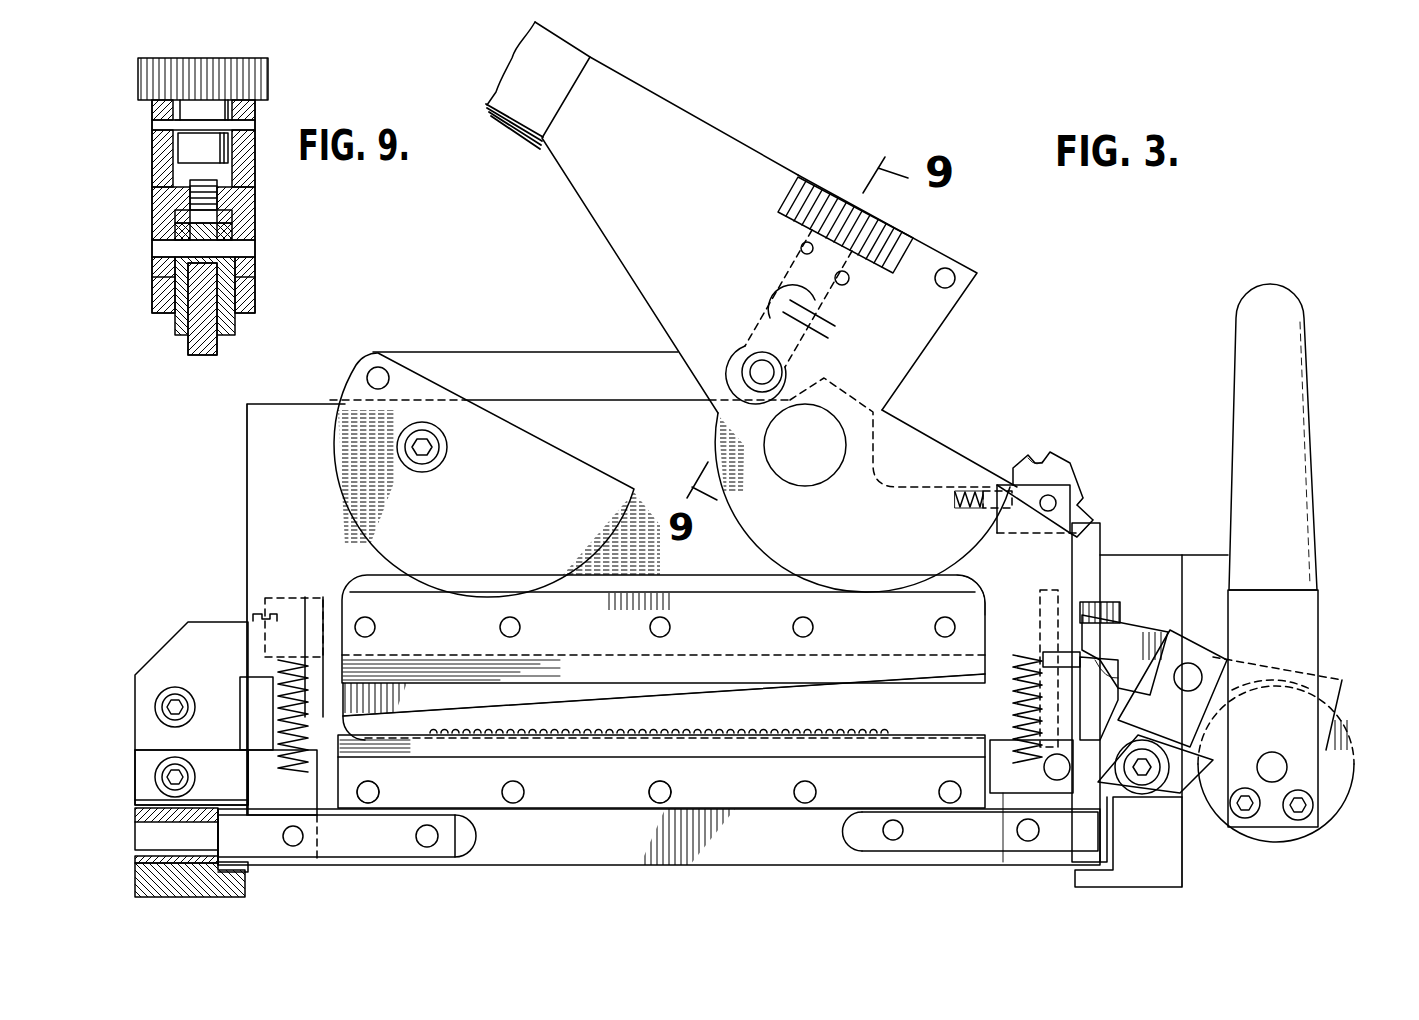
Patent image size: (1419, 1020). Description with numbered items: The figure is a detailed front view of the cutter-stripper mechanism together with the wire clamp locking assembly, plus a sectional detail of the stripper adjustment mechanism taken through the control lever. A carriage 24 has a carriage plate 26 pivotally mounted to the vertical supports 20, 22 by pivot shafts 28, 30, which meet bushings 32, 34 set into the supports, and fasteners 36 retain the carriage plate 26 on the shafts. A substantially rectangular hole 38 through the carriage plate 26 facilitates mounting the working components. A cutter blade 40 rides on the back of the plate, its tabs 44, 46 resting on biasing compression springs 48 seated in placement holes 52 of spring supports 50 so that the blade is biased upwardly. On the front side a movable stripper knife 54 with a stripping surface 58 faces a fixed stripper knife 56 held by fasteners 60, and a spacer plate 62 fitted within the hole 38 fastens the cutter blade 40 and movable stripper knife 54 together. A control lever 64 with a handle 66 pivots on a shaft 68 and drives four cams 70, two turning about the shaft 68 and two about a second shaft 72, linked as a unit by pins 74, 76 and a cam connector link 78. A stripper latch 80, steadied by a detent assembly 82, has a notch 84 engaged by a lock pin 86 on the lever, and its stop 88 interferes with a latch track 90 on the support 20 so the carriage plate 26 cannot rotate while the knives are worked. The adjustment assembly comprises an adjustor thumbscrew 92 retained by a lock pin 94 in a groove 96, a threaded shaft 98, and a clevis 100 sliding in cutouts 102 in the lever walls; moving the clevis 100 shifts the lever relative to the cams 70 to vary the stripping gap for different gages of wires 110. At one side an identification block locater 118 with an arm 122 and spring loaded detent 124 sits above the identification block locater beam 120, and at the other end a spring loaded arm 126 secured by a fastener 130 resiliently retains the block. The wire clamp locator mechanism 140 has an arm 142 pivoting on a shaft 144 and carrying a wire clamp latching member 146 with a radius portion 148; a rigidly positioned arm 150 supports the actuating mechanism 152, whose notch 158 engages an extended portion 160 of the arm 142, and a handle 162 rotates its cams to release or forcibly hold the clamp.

In FIG. 3, the vertical support 20 is at (1172, 865).
In FIG. 3, the vertical support 22 is at (140, 866).
In FIG. 3, the carriage 24 is at (243, 408).
In FIG. 9, the carriage plate 26 is at (202, 343).
In FIG. 3, the carriage plate 26 is at (257, 527).
In FIG. 3, the pivot shaft 28 is at (933, 843).
In FIG. 3, the pivot shaft 30 is at (408, 826).
In FIG. 3, the bushing 32 is at (1098, 826).
In FIG. 3, the bushing 34 is at (218, 820).
In FIG. 3, the fasteners 36 is at (904, 832).
In FIG. 3, the substantially rectangular hole 38 is at (708, 575).
In FIG. 3, the cutter blade 40 is at (676, 694).
In FIG. 3, the tab 44 is at (1052, 592).
In FIG. 3, the tab 46 is at (274, 596).
In FIG. 3, the biasing compression springs 48 is at (282, 718).
In FIG. 3, the spring supports 50 is at (320, 784).
In FIG. 3, the placement holes 52 is at (287, 778).
In FIG. 3, the movable stripper knife 54 is at (1035, 597).
In FIG. 3, the fixed stripper knife 56 is at (573, 797).
In FIG. 3, the stripping surface 58 is at (556, 672).
In FIG. 3, the fasteners 60 is at (668, 786).
In FIG. 3, the spacer plate 62 is at (985, 600).
In FIG. 9, the control lever 64 is at (258, 100).
In FIG. 3, the control lever 64 is at (948, 255).
In FIG. 3, the handle 66 is at (566, 42).
In FIG. 3, the shaft 68 is at (822, 478).
In FIG. 3, the cams 70 is at (925, 433).
In FIG. 3, the second shaft 72 is at (428, 458).
In FIG. 9, the pin 74 is at (255, 244).
In FIG. 3, the pin 74 is at (752, 365).
In FIG. 3, the pin 76 is at (384, 370).
In FIG. 3, the cam connector link 78 is at (505, 356).
In FIG. 3, the stripper latch 80 is at (1080, 478).
In FIG. 3, the detent assembly 82 is at (985, 490).
In FIG. 3, the notch 84 is at (1030, 458).
In FIG. 3, the lock pin 86 is at (953, 276).
In FIG. 3, the stop 88 is at (1088, 510).
In FIG. 3, the latch track 90 is at (1100, 526).
In FIG. 9, the adjustor thumbscrew 92 is at (270, 62).
In FIG. 3, the adjustor thumbscrew 92 is at (823, 188).
In FIG. 9, the lock pin 94 is at (255, 124).
In FIG. 3, the lock pin 94 is at (850, 280).
In FIG. 9, the groove 96 is at (190, 118).
In FIG. 3, the groove 96 is at (800, 245).
In FIG. 9, the threaded shaft 98 is at (217, 192).
In FIG. 3, the threaded shaft 98 is at (772, 306).
In FIG. 9, the clevis 100 is at (157, 210).
In FIG. 3, the clevis 100 is at (805, 345).
In FIG. 9, the cutouts 102 is at (250, 175).
In FIG. 3, the cutouts 102 is at (822, 322).
In FIG. 3, the wires 110 is at (490, 731).
In FIG. 3, the identification block locater 118 is at (163, 645).
In FIG. 3, the identification block locater beam 120 is at (140, 782).
In FIG. 3, the arm 122 is at (284, 627).
In FIG. 3, the spring loaded detent 124 is at (258, 617).
In FIG. 3, the spring loaded arm 126 is at (1058, 657).
In FIG. 3, the fastener 130 is at (1112, 618).
In FIG. 3, the wire clamp locator mechanism 140 is at (1186, 634).
In FIG. 3, the arm 142 is at (1128, 714).
In FIG. 3, the shaft 144 is at (1143, 808).
In FIG. 3, the wire clamp latching member 146 is at (1342, 680).
In FIG. 3, the radius portion 148 is at (1112, 670).
In FIG. 3, the rigidly positioned arm 150 is at (1193, 795).
In FIG. 3, the actuating mechanism 152 is at (1345, 766).
In FIG. 3, the notch 158 is at (1238, 728).
In FIG. 3, the extended portion 160 is at (1160, 748).
In FIG. 3, the handle 162 is at (1297, 506).